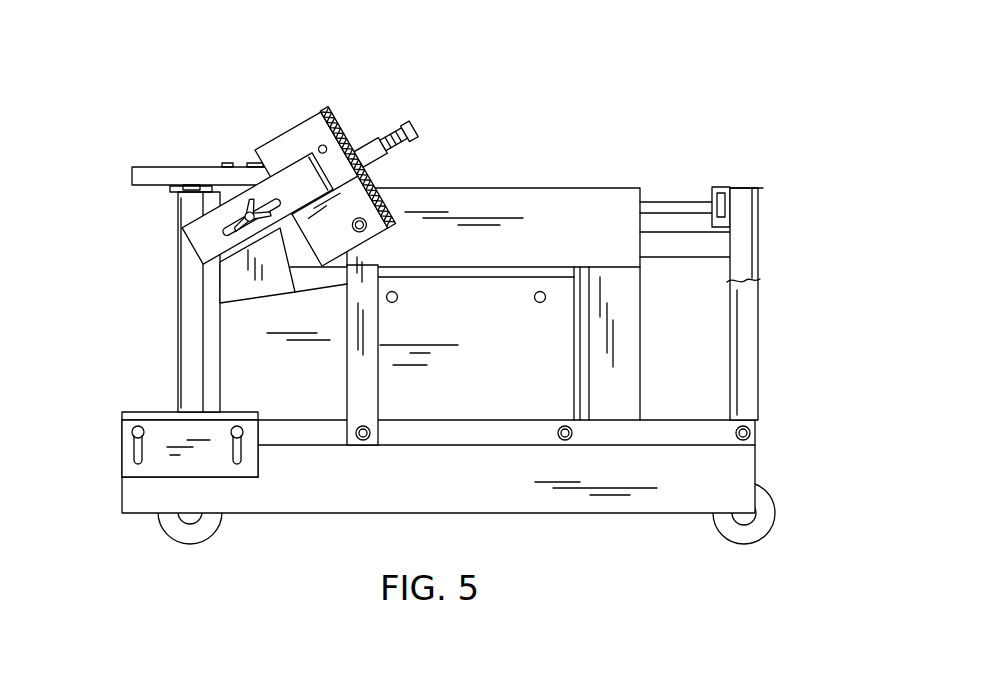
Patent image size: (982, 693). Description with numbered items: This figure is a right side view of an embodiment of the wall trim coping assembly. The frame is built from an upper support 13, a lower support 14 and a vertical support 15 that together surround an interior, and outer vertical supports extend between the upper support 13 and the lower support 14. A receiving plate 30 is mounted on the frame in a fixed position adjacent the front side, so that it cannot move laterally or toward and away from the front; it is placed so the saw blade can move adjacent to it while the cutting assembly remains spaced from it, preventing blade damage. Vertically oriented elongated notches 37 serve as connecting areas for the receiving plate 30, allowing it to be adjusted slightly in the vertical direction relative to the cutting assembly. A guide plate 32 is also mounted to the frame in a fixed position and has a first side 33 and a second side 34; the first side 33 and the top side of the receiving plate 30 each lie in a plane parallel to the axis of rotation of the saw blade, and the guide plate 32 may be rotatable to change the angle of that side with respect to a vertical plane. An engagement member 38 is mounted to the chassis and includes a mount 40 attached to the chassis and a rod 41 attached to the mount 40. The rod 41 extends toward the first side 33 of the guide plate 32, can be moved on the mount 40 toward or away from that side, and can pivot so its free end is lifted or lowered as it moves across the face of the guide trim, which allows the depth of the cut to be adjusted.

The upper support 13 is at (736, 174).
The lower support 14 is at (667, 529).
The vertical support 15 is at (774, 327).
The receiving plate 30 is at (145, 412).
The guide plate 32 is at (330, 110).
The first side 33 is at (312, 130).
The second side 34 is at (343, 138).
The elongated notches 37 is at (138, 470).
The engagement member 38 is at (229, 266).
The mount 40 is at (250, 215).
The rod 41 is at (205, 247).